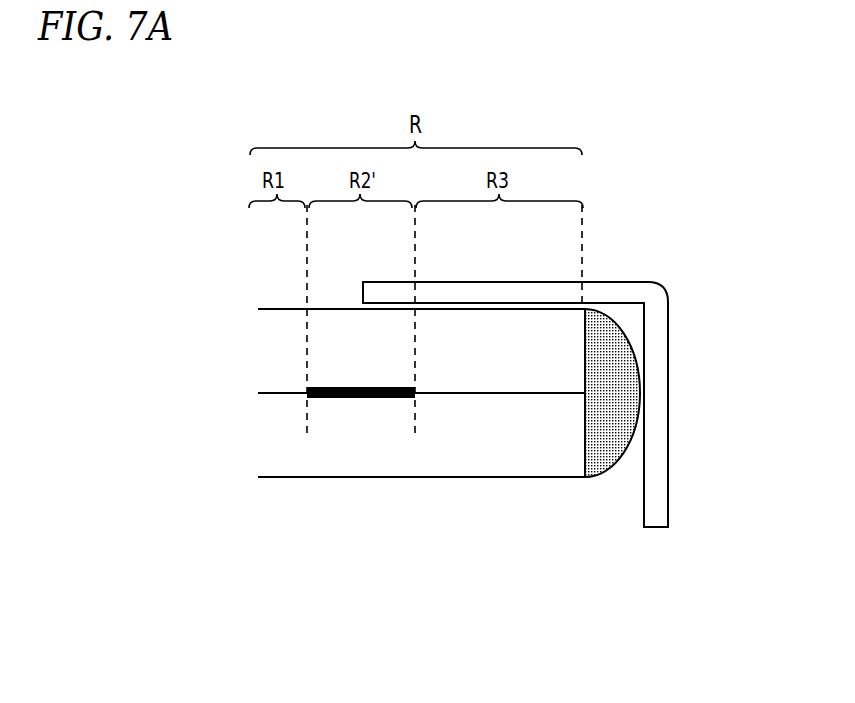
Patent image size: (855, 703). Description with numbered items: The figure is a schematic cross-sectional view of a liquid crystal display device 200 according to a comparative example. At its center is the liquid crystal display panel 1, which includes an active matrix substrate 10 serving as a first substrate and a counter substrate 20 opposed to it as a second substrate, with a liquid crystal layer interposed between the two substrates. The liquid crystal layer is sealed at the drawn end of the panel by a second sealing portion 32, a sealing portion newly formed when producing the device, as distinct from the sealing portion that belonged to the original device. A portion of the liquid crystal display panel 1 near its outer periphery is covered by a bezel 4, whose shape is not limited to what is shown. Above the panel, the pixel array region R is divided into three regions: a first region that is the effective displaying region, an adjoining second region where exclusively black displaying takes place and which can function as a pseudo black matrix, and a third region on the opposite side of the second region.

The liquid crystal display device 200 is at (705, 276).
The liquid crystal display panel 1 is at (470, 533).
The active matrix substrate 10 is at (398, 448).
The counter substrate 20 is at (452, 365).
The second sealing portion 32 is at (611, 443).
The bezel 4 is at (660, 396).